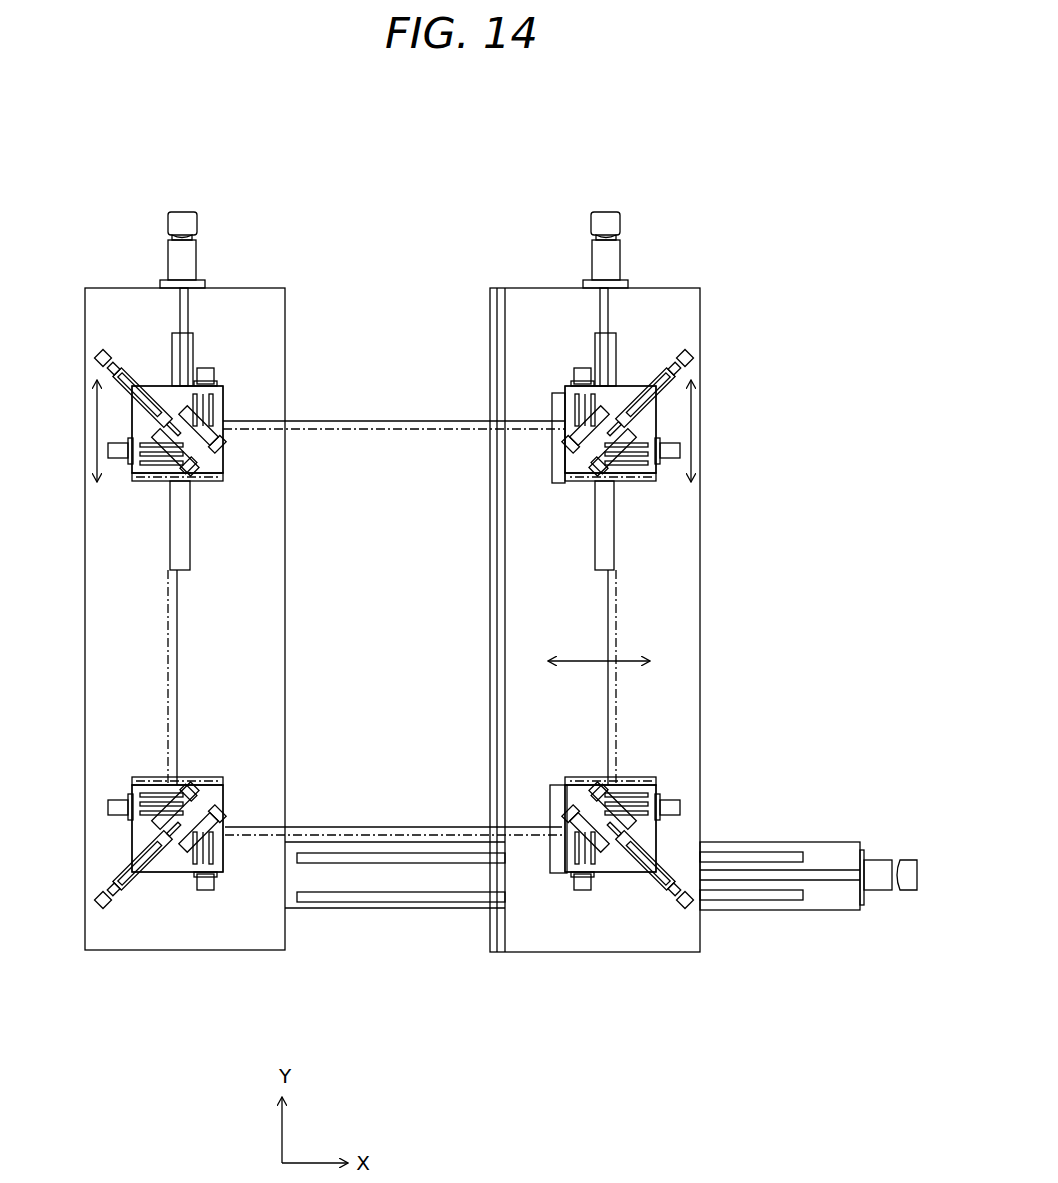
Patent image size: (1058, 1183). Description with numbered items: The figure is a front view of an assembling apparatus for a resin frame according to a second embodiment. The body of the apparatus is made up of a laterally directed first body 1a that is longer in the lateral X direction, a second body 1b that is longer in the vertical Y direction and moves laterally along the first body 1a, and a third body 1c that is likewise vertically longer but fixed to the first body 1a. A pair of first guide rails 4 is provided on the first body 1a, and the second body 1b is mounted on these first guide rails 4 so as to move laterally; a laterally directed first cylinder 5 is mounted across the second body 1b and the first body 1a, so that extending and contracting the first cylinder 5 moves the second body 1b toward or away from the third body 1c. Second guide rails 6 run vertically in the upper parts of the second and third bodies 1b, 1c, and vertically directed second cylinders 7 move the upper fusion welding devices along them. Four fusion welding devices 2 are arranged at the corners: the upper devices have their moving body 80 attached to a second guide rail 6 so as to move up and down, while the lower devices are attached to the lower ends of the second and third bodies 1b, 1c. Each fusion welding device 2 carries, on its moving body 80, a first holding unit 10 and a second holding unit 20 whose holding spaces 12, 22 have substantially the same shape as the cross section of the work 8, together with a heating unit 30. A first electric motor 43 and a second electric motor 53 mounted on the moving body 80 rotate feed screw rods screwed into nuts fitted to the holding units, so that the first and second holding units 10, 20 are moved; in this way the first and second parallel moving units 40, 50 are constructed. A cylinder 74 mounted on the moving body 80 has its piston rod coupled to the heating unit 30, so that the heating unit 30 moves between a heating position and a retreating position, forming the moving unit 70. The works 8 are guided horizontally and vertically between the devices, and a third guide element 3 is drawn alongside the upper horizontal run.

The first body 1a is at (378, 909).
The second body 1b is at (700, 562).
The third body 1c is at (287, 566).
The fusion welding device 2 is at (120, 477).
The upper guide rail 3 is at (352, 418).
The first guide rails 4 is at (770, 852).
The first cylinder 5 is at (884, 875).
The second guide rails 6 is at (191, 560).
The second cylinders 7 is at (197, 247).
The work 8 is at (420, 421).
The first holding unit 10 is at (224, 440).
The holding space 12 is at (222, 412).
The second holding unit 20 is at (218, 482).
The holding space 22 is at (165, 482).
The heating unit 30 is at (622, 865).
The first parallel moving unit 40 is at (232, 360).
The first electric motor 43 is at (205, 368).
The second parallel moving unit 50 is at (123, 432).
The second electric motor 53 is at (108, 450).
The moving unit 70 is at (140, 378).
The cylinder 74 is at (99, 354).
The moving body 80 is at (228, 462).